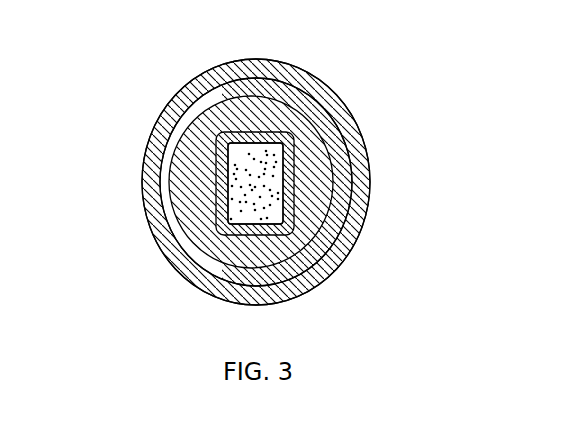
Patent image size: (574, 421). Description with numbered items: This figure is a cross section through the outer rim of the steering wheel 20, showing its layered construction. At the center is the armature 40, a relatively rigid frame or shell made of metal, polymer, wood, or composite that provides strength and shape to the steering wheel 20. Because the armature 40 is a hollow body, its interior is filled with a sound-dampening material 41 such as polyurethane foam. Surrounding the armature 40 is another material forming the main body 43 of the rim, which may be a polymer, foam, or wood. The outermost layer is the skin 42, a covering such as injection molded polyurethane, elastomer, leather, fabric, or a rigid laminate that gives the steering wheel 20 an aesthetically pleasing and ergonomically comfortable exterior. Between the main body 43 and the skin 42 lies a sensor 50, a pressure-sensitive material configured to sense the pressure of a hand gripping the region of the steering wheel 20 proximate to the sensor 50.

The steering wheel 20 is at (157, 65).
The armature 40 is at (293, 210).
The sound-dampening material 41 is at (270, 172).
The skin 42 is at (330, 98).
The main body 43 is at (206, 231).
The sensor 50 is at (170, 125).